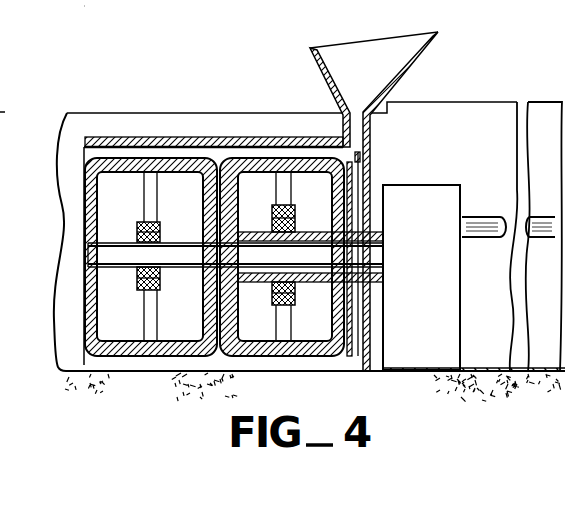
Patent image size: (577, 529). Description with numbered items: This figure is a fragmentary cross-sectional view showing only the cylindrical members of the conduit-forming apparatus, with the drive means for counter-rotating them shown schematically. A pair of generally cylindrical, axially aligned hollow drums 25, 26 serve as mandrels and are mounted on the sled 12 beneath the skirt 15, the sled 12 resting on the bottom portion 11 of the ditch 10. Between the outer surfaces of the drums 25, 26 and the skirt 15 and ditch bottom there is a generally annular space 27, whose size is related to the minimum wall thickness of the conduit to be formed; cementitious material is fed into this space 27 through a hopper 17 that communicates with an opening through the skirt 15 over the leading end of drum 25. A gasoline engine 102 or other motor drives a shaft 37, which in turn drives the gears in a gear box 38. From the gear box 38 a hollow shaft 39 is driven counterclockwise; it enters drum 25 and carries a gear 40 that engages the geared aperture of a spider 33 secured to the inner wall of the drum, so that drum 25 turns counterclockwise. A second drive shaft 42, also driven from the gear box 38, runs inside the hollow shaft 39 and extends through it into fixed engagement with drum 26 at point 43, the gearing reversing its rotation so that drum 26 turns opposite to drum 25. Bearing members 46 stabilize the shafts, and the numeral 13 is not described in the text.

The ditch 10 is at (187, 120).
The bottom portion 11 is at (187, 383).
The sled 12 is at (11, 88).
The upper member 13 is at (98, 5).
The skirt 15 is at (227, 138).
The hopper 17 is at (368, 55).
The drum 25 is at (277, 168).
The drum 26 is at (105, 166).
The annular space 27 is at (148, 155).
The spider 33 is at (152, 200).
The shaft 37 is at (483, 217).
The gear box 38 is at (408, 197).
The hollow shaft 39 is at (254, 283).
The gear 40 is at (297, 288).
The second drive shaft 42 is at (112, 250).
The point 43 is at (90, 242).
The bearing members 46 is at (225, 280).
The gasoline engine 102 is at (557, 192).